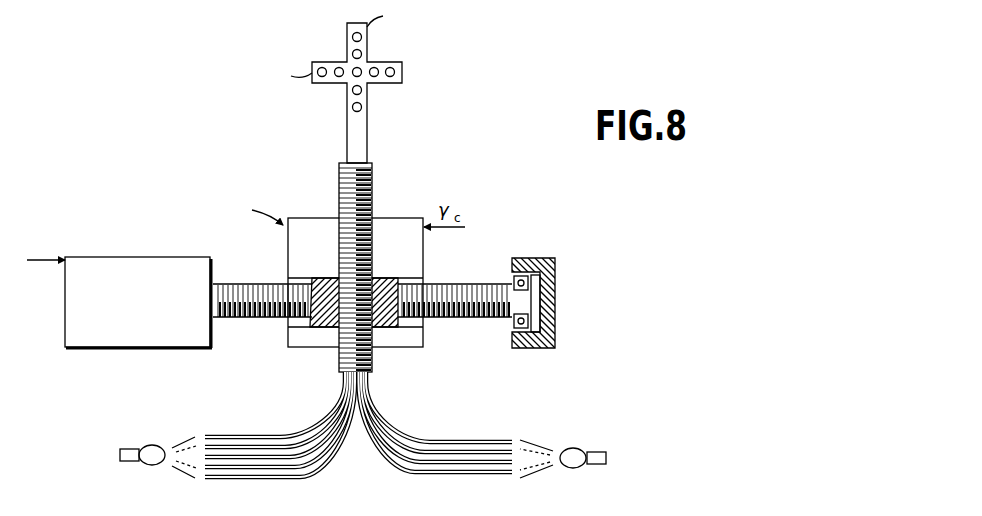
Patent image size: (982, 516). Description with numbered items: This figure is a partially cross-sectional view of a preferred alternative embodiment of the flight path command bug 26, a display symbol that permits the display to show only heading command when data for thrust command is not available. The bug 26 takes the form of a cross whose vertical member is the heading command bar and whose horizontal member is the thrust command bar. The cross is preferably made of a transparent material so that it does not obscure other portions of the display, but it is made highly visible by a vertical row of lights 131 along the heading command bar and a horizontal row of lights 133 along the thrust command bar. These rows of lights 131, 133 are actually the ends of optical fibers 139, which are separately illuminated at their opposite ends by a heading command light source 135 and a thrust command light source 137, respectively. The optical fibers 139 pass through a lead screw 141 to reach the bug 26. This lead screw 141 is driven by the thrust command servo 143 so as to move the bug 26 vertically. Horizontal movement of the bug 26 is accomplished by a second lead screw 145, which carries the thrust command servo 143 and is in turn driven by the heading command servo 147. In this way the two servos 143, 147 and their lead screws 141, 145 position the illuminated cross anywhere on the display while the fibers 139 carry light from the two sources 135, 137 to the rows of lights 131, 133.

The flight path command bug 26 is at (340, 47).
The vertical row of lights 131 is at (361, 109).
The horizontal row of lights 133 is at (376, 68).
The lead screw 141 is at (374, 205).
The thrust command servo 143 is at (311, 218).
The lead screw 145 is at (447, 284).
The heading command servo 147 is at (65, 322).
The heading command light source 135 is at (157, 446).
The thrust command light source 137 is at (576, 447).
The optical fibers 139 is at (386, 424).